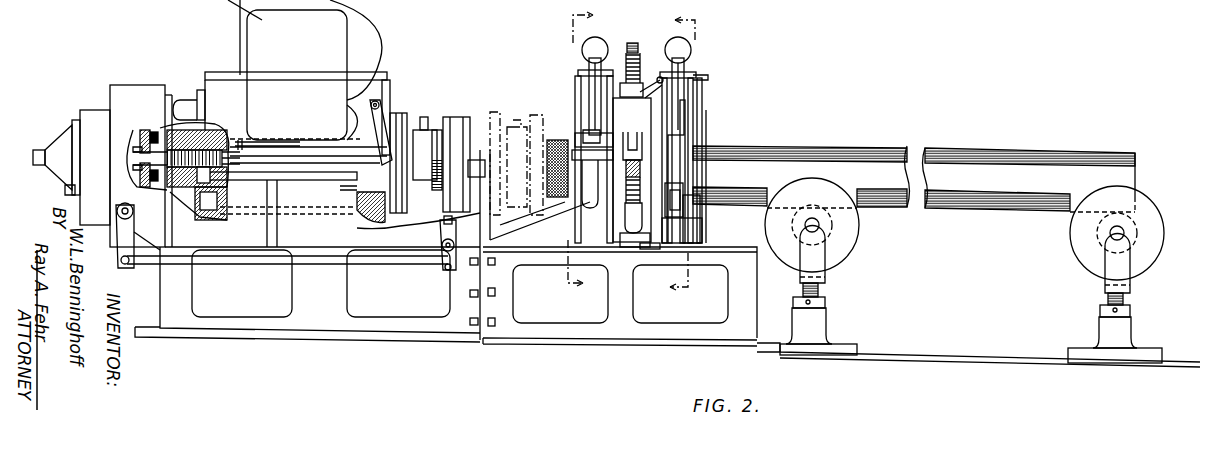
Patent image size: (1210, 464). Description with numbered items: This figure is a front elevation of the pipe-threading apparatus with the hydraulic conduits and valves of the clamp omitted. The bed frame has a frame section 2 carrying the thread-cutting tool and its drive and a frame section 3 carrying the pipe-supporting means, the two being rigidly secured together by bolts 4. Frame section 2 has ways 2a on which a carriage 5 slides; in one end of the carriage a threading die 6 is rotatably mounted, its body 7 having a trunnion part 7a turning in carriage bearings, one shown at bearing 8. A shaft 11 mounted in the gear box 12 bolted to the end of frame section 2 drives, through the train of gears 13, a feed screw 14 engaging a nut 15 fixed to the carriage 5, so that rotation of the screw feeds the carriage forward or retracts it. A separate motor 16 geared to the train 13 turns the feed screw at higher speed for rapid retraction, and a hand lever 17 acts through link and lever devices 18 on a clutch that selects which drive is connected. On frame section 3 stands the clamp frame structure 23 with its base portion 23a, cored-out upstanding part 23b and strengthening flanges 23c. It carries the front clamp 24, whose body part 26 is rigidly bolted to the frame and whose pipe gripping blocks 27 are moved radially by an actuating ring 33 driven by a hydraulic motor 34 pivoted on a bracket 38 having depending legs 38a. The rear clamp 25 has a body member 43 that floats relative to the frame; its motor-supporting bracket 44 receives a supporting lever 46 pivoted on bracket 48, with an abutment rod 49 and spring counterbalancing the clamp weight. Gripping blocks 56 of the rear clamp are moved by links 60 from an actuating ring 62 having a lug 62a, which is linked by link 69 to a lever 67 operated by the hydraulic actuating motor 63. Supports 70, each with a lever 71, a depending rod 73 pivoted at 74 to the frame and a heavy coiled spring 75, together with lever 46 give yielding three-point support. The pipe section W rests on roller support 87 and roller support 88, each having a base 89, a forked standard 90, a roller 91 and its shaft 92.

The frame section 2 is at (305, 325).
The ways 2a is at (302, 172).
The frame section 3 is at (615, 332).
The bolts 4 is at (508, 368).
The carriage 5 is at (380, 75).
The threading die 6 is at (432, 115).
The die body 7 is at (402, 115).
The trunnion part 7a is at (358, 190).
The bearing 8 is at (360, 228).
The shaft 11 is at (185, 105).
The gear box 12 is at (122, 100).
The train of gears 13 is at (135, 142).
The feed screw 14 is at (215, 128).
The nut 15 is at (186, 205).
The motor 16 is at (57, 130).
The hand lever 17 is at (440, 238).
The link and lever devices 18 is at (157, 266).
The frame structure 23 is at (556, 161).
The base portion 23a is at (592, 208).
The cored-out upstanding part 23b is at (645, 88).
The strengthening flanges 23c is at (540, 232).
The front clamp 24 is at (575, 70).
The rear clamp 25 is at (745, 62).
The body part 26 is at (590, 170).
The pipe gripping blocks 27 is at (577, 110).
The actuating ring 33 is at (578, 118).
The hydraulic motor 34 is at (582, 50).
The bracket 38 is at (578, 72).
The depending legs 38a is at (592, 100).
The body member 43 is at (672, 222).
The motor-supporting bracket 44 is at (693, 95).
The supporting lever 46 is at (676, 37).
The bracket 48 is at (695, 103).
The abutment rod 49 is at (630, 43).
The gripping blocks 56 is at (697, 112).
The links 60 is at (685, 205).
The actuating ring 62 is at (686, 125).
The lug 62a is at (700, 150).
The hydraulic actuating motor 63 is at (697, 74).
The lever 67 is at (702, 82).
The link 69 is at (703, 138).
The supports 70 is at (630, 212).
The lever 71 is at (642, 252).
The depending rod 73 is at (627, 238).
The pivotal connection 74 is at (632, 170).
The coiled spring 75 is at (623, 175).
The roller support 87 is at (1137, 294).
The roller support 88 is at (837, 292).
The base 89 is at (830, 327).
The forked standard 90 is at (825, 253).
The roller 91 is at (859, 242).
The shaft 92 is at (833, 222).
The pipe section W is at (930, 152).